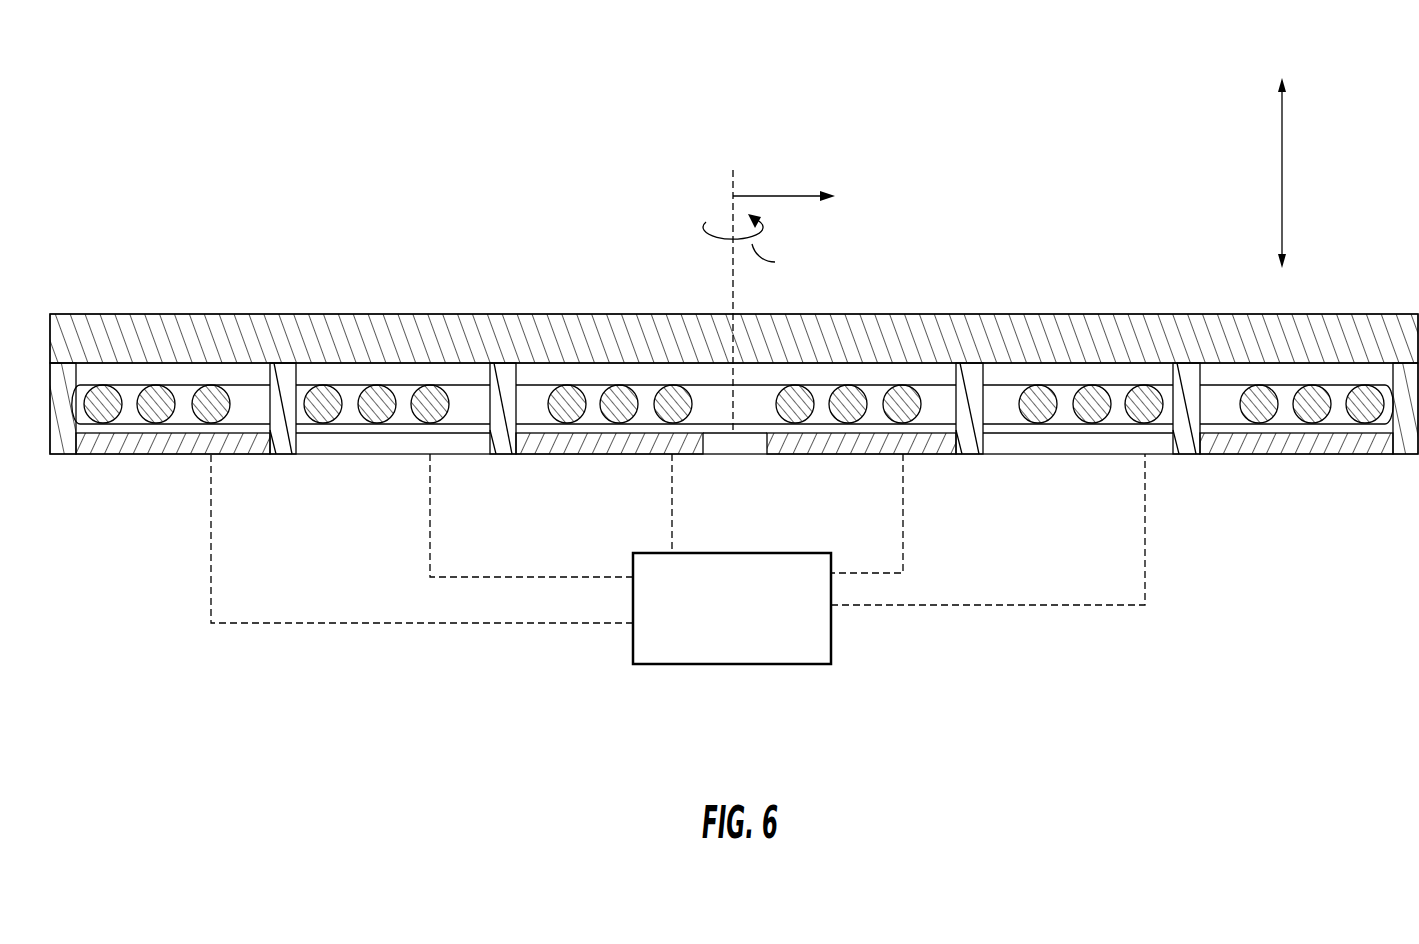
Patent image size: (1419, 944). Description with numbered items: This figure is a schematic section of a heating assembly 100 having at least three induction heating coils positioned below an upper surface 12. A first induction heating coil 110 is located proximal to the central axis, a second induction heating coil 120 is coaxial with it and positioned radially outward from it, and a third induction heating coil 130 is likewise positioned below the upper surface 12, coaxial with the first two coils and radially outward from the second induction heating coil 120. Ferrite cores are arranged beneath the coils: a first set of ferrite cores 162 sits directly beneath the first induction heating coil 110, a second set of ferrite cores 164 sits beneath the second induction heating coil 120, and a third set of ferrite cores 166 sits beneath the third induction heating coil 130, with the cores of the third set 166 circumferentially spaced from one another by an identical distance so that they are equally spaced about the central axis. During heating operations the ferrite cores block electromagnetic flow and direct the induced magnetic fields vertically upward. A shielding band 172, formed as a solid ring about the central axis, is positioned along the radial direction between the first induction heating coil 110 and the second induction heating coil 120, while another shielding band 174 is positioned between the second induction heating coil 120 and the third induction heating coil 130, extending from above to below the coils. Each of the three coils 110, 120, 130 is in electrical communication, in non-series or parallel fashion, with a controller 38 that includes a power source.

The heating assembly 100 is at (952, 726).
The upper surface 12 is at (555, 322).
The controller 38 is at (717, 620).
The first induction heating coil 110 is at (881, 366).
The second induction heating coil 120 is at (1081, 366).
The third induction heating coil 130 is at (1300, 366).
The first set of ferrite cores 162 is at (585, 446).
The second set of ferrite cores 164 is at (353, 446).
The third set of ferrite cores 166 is at (120, 446).
The shielding band 172 is at (500, 446).
The shielding band 174 is at (280, 446).